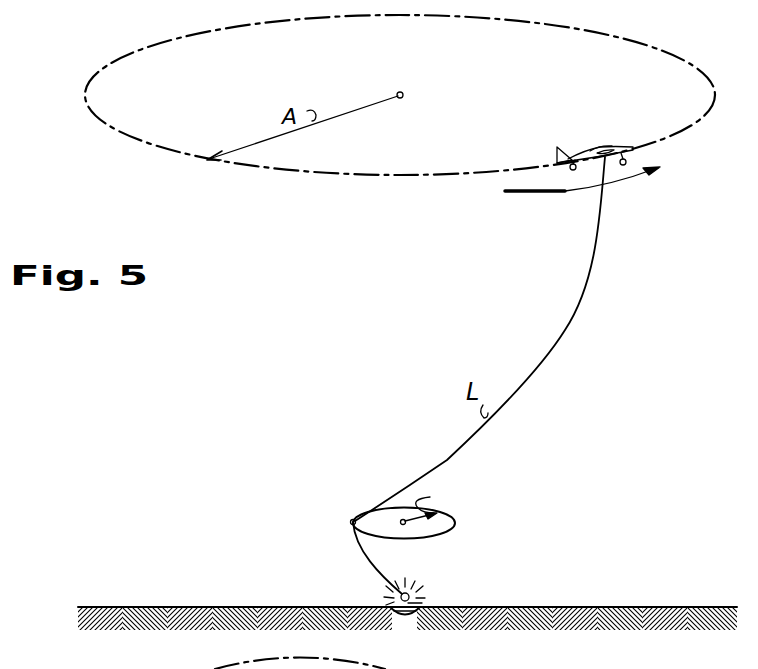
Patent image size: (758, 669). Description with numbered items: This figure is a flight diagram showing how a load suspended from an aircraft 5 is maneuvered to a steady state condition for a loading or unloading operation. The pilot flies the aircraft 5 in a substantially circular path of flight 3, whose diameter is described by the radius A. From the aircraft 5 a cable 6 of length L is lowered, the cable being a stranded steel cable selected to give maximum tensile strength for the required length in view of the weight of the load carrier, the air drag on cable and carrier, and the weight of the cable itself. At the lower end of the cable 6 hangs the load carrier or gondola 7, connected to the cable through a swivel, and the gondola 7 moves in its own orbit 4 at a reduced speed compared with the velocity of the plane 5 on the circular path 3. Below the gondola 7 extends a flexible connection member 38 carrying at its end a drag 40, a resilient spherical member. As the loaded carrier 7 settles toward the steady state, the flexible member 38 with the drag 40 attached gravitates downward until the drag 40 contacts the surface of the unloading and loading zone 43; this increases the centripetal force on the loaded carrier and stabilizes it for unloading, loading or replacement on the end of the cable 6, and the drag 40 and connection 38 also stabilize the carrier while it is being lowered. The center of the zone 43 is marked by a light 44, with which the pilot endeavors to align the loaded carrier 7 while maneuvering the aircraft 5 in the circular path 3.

The path of flight 3 is at (333, 173).
The circular path of cable lower end 4 is at (455, 513).
The aircraft 5 is at (598, 139).
The cable 6 is at (565, 334).
The load carrier or gondola 7 is at (349, 522).
The connection member 38 is at (365, 566).
The drag 40 is at (424, 580).
The unloading and loading zone 43 is at (403, 617).
The light 44 is at (420, 603).